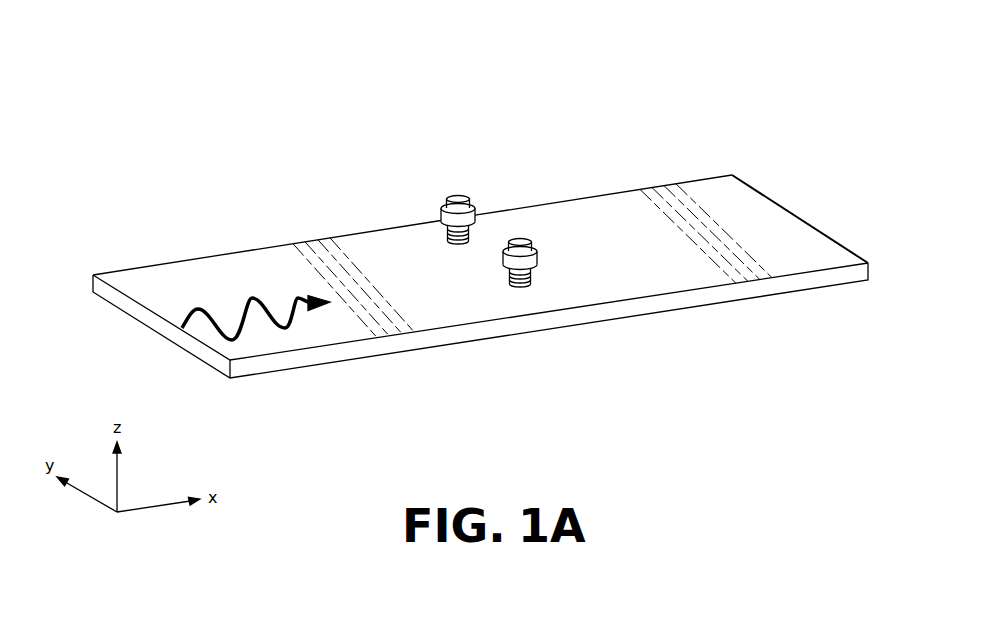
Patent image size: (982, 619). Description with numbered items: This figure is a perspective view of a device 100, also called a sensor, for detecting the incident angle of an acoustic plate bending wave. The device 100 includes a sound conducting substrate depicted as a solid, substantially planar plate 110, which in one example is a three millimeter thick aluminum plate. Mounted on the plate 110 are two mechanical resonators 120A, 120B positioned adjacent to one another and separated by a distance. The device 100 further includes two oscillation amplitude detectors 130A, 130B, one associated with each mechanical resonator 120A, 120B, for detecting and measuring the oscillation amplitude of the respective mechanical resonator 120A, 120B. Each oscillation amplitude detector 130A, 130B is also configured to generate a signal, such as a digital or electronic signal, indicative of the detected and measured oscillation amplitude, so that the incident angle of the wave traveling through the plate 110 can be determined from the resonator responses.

The device 100 is at (829, 85).
The plate 110 is at (362, 257).
The mechanical resonator 120A is at (439, 174).
The mechanical resonator 120B is at (543, 341).
The oscillation amplitude detector 130A is at (463, 199).
The oscillation amplitude detector 130B is at (521, 242).